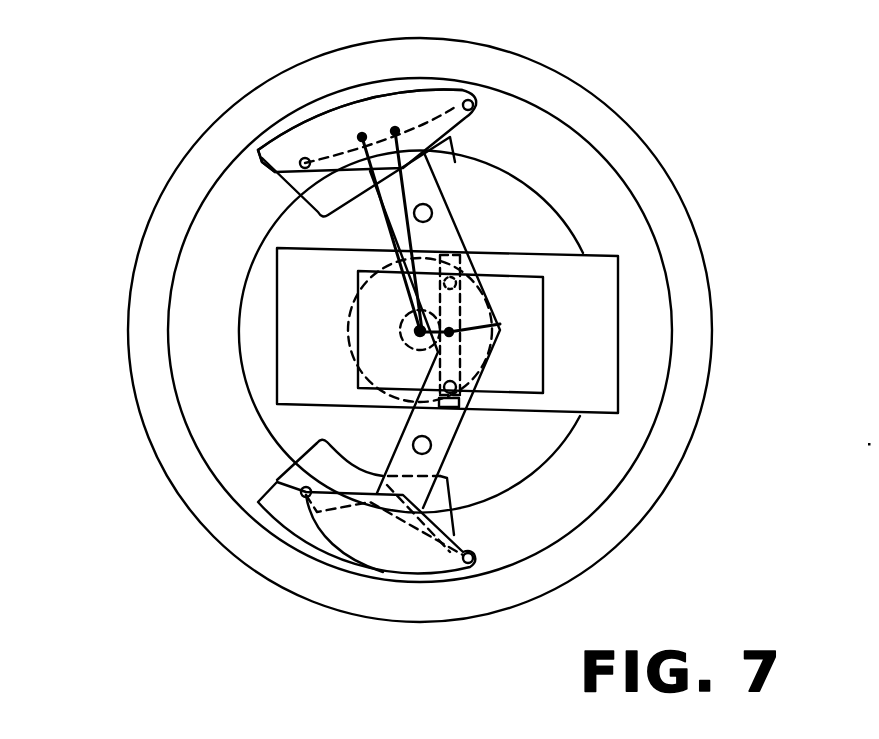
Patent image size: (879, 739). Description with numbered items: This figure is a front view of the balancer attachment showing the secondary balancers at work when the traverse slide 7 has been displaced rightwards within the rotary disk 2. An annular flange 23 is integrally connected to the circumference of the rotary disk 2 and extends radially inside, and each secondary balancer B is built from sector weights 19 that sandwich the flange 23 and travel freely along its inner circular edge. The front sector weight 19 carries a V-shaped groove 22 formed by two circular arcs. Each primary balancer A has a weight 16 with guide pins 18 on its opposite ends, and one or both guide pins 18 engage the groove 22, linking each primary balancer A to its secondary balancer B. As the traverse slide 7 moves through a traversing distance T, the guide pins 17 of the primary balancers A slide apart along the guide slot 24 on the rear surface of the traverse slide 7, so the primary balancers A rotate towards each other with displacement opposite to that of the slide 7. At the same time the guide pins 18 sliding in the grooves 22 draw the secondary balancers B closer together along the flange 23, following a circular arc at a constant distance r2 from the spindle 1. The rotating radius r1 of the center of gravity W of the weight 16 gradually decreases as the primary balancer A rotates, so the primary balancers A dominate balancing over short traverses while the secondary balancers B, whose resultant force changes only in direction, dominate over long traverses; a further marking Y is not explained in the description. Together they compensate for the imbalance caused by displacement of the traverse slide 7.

The spindle 1 is at (505, 318).
The rotary disk 2 is at (652, 468).
The traverse slide 7 is at (605, 313).
The weight 16 is at (393, 127).
The guide pins 17 is at (452, 262).
The guide pins 18 is at (302, 159).
The sector weights 19 is at (285, 128).
The V-shaped groove 22 is at (263, 160).
The annular flange 23 is at (254, 267).
The guide slot 24 is at (505, 320).
The primary balancers A is at (427, 100).
The secondary balancers B is at (307, 133).
The traversing distance T is at (415, 340).
The center of gravity W is at (395, 128).
The wear line Y is at (363, 136).
The rotating radius r1 is at (405, 195).
The constant distance r2 is at (397, 200).